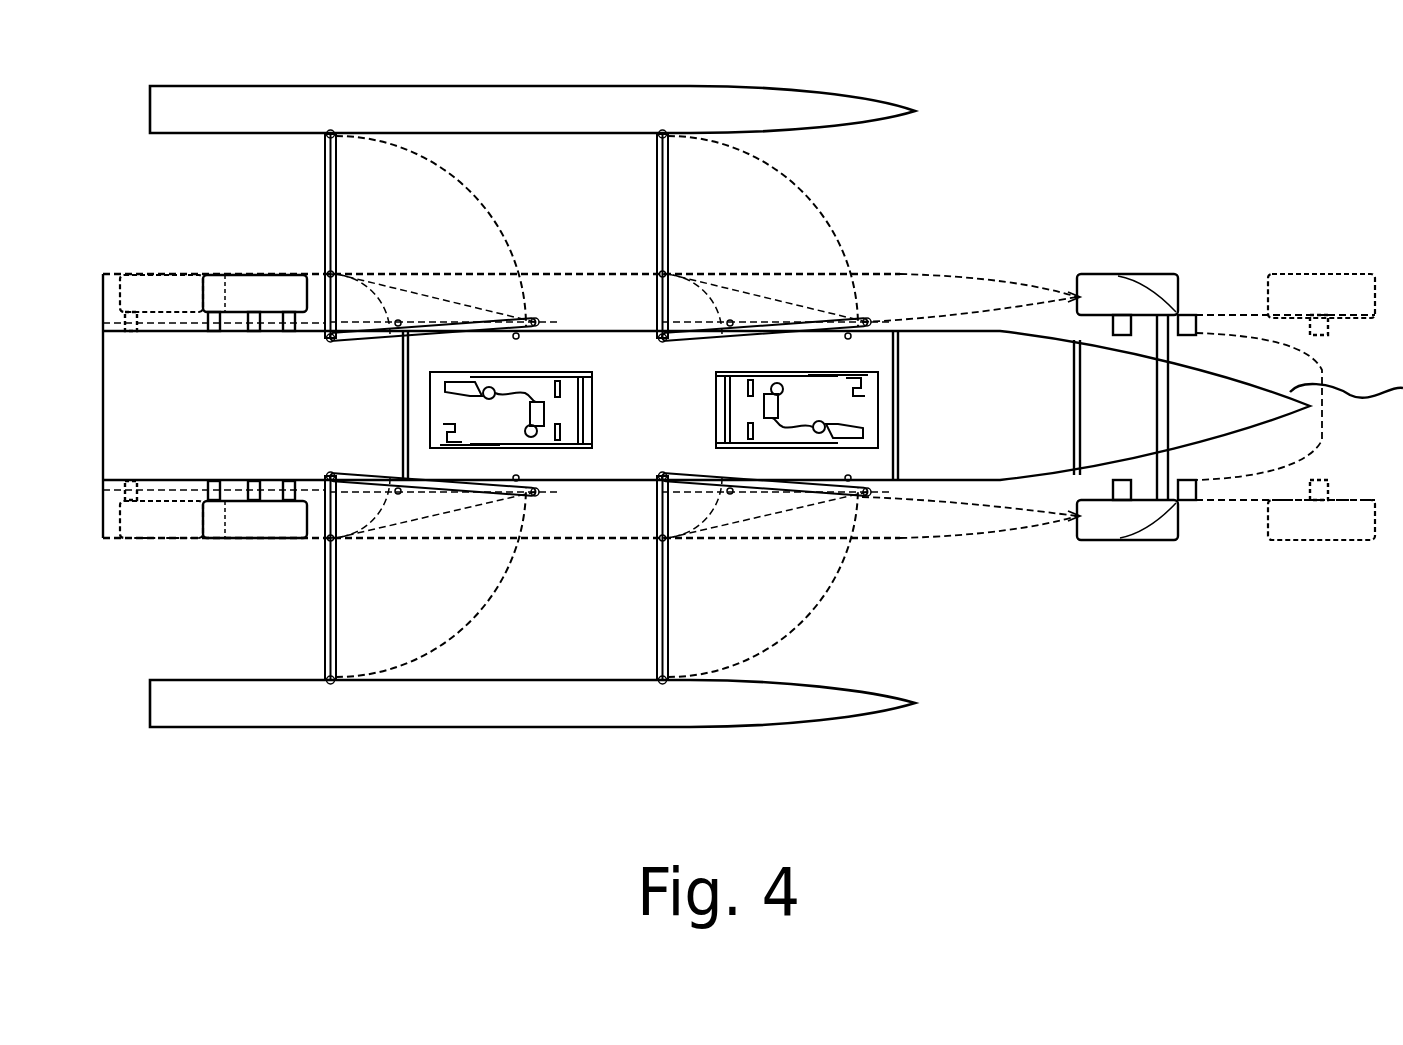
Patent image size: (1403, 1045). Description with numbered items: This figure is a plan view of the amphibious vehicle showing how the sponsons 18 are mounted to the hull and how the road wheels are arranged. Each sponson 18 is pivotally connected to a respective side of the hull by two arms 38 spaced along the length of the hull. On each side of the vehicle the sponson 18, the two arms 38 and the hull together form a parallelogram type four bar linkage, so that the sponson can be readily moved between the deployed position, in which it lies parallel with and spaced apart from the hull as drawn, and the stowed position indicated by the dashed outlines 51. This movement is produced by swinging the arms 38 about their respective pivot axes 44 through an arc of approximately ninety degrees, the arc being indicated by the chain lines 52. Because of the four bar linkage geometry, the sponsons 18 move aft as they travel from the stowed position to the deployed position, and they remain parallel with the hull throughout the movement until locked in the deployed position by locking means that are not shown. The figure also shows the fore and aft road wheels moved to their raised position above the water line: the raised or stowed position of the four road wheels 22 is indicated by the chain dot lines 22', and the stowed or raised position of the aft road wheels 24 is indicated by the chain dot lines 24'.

The sponsons 18 is at (790, 98).
The road wheels 22 is at (1150, 413).
The chain dot lines indicating the raised or stowed position of the road wheels 22' is at (1334, 398).
The aft road wheels 24 is at (255, 396).
The chain dot lines indicating the stowed or raised position of the aft road wheels 24' is at (161, 399).
The arms 38 is at (337, 206).
The pivot axes 44 is at (322, 342).
The dashed outlines indicating the stowed position of the sponsons 51 is at (1032, 282).
The chain lines indicating the arc of arm movement 52 is at (480, 200).